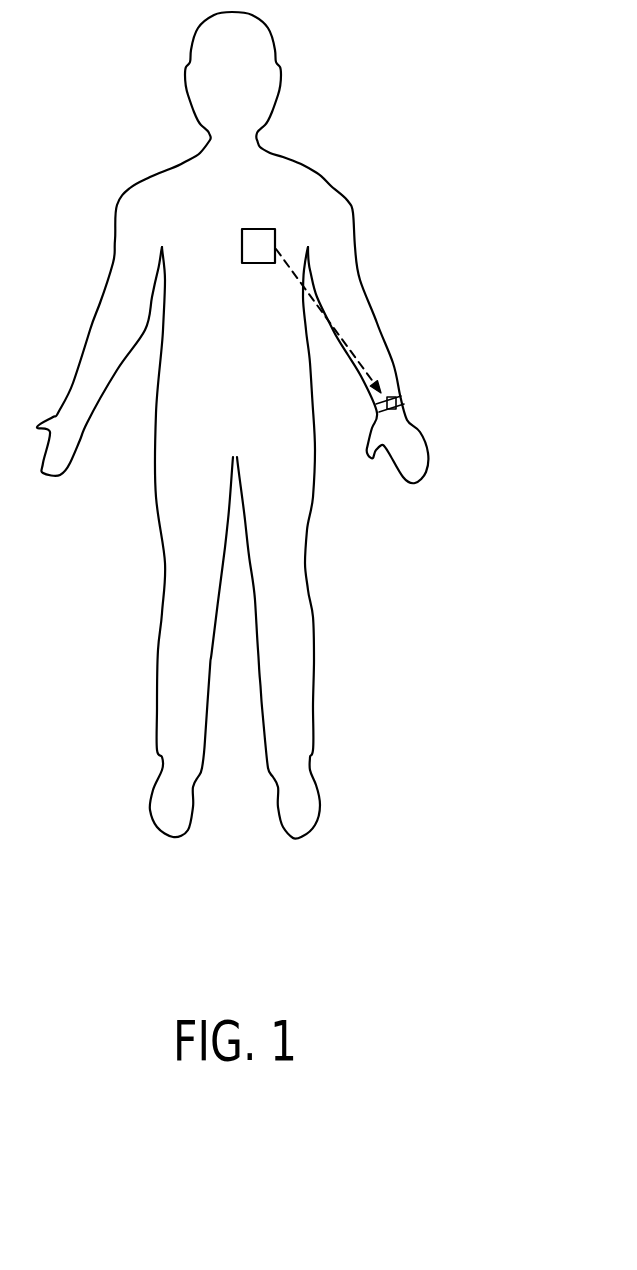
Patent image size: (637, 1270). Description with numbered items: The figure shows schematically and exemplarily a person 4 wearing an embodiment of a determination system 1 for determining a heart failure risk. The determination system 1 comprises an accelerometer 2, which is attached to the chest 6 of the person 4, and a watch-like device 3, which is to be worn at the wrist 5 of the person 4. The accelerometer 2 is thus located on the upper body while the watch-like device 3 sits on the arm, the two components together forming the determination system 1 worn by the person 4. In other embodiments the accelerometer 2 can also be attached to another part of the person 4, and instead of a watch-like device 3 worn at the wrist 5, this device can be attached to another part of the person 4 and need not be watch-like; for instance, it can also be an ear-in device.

The determination system 1 is at (410, 256).
The accelerometer 2 is at (272, 222).
The watch-like device 3 is at (420, 385).
The person 4 is at (155, 497).
The wrist 5 is at (420, 405).
The chest 6 is at (195, 232).